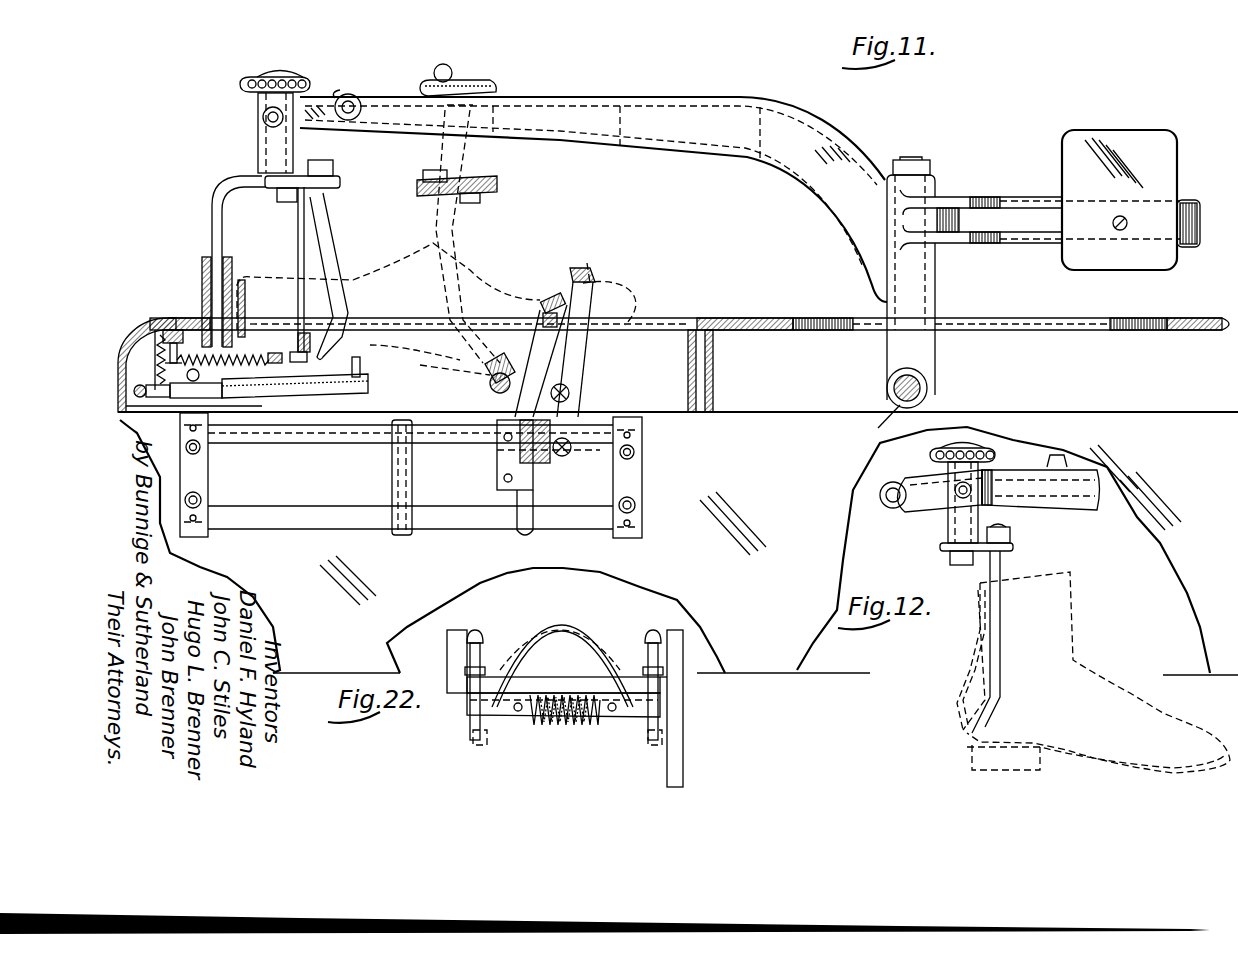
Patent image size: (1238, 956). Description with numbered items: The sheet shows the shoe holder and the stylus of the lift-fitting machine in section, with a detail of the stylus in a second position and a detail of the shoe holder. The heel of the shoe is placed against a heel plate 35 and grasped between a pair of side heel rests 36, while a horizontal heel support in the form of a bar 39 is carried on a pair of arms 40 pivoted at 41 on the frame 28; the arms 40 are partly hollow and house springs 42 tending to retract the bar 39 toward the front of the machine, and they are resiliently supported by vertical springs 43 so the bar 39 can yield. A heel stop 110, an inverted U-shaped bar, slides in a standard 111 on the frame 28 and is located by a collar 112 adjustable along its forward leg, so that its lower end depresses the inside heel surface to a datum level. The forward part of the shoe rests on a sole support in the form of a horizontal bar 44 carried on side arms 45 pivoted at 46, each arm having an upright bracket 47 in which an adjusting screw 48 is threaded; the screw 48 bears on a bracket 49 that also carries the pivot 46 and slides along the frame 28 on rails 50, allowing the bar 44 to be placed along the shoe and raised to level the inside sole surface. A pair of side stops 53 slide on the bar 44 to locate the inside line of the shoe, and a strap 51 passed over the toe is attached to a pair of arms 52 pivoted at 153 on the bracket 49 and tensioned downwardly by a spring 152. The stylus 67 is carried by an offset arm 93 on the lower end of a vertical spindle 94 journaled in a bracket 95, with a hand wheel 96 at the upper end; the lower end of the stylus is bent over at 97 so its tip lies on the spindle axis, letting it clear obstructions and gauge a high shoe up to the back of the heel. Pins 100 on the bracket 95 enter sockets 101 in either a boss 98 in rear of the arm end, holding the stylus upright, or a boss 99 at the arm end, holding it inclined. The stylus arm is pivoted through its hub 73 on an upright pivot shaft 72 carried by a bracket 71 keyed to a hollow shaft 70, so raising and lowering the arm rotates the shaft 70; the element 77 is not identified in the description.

In FIG. 11, the frame 28 is at (146, 323).
In FIG. 11, the heel plate 35 is at (246, 280).
In FIG. 11, the side heel rests 36 is at (296, 322).
In FIG. 11, the bar 39 is at (364, 372).
In FIG. 11, the arms 40 is at (368, 390).
In FIG. 11, the pivot 41 is at (134, 392).
In FIG. 11, the springs 42 is at (296, 391).
In FIG. 11, the vertical springs 43 is at (140, 360).
In FIG. 11, the horizontal bar 44 is at (490, 376).
In FIG. 11, the side arms 45 is at (500, 393).
In FIG. 11, the pivot 46 is at (570, 393).
In FIG. 11, the upright bracket 47 is at (566, 372).
In FIG. 11, the adjusting screw 48 is at (568, 290).
In FIG. 11, the bracket 49 is at (545, 432).
In FIG. 11, the rails 50 is at (318, 515).
In FIG. 11, the strap 51 is at (585, 282).
In FIG. 22, the strap 51 is at (578, 640).
In FIG. 22, the arms 52 is at (480, 742).
In FIG. 11, the side stops 53 is at (430, 371).
In FIG. 11, the stylus 67 is at (334, 250).
In FIG. 12, the stylus 67 is at (1080, 505).
In FIG. 11, the hollow shaft 70 is at (928, 390).
In FIG. 11, the bracket 71 is at (936, 350).
In FIG. 11, the upright pivot shaft 72 is at (922, 296).
In FIG. 11, the hub 73 is at (936, 190).
In FIG. 11, the pivot support 77 is at (879, 420).
In FIG. 11, the offset arm 93 is at (498, 183).
In FIG. 12, the vertical spindle 94 is at (952, 522).
In FIG. 11, the bracket 95 is at (320, 165).
In FIG. 11, the hand wheel 96 is at (300, 75).
In FIG. 12, the hand wheel 96 is at (930, 455).
In FIG. 11, the bent lower end 97 is at (270, 150).
In FIG. 12, the bent lower end 97 is at (986, 732).
In FIG. 12, the boss 98 is at (984, 480).
In FIG. 11, the boss 99 is at (268, 125).
In FIG. 12, the pins 100 is at (950, 505).
In FIG. 11, the sockets 101 is at (348, 94).
In FIG. 12, the sockets 101 is at (900, 490).
In FIG. 11, the heel stop 110 is at (305, 307).
In FIG. 11, the standard 111 is at (237, 290).
In FIG. 11, the collar 112 is at (202, 262).
In FIG. 22, the spring 152 is at (540, 722).
In FIG. 22, the pivot 153 is at (575, 722).